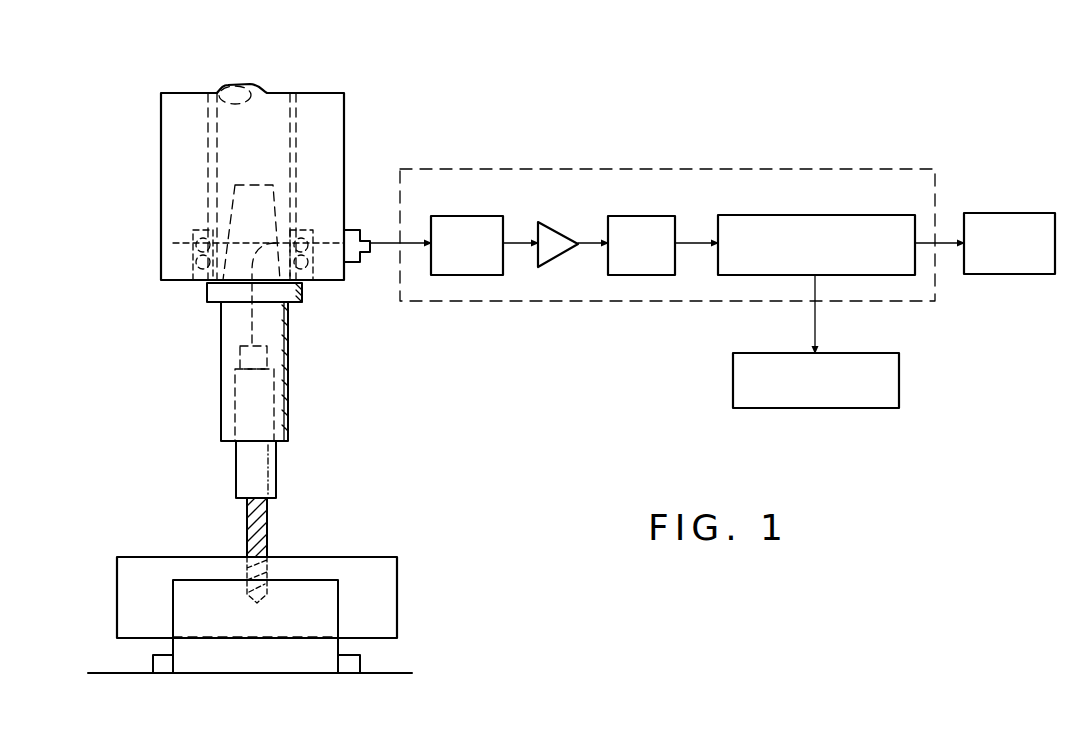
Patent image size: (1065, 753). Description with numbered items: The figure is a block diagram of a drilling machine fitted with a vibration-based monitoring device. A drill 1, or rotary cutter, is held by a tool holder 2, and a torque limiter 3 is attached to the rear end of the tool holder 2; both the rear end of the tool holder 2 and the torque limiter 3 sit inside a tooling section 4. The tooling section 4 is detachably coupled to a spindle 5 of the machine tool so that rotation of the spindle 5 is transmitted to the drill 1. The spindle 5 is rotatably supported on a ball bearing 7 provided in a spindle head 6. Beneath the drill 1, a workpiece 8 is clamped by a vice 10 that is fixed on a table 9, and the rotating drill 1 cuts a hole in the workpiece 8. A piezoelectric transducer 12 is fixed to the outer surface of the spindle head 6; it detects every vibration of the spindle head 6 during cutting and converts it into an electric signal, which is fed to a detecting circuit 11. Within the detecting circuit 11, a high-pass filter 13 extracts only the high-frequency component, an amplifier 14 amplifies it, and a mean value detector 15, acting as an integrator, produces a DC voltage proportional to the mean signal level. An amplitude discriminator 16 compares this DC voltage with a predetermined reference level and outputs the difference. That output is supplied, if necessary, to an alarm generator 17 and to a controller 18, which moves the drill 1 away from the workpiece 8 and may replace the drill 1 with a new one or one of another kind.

The drill 1 is at (269, 521).
The tool holder 2 is at (276, 469).
The torque limiter 3 is at (271, 361).
The tooling section 4 is at (221, 332).
The spindle 5 is at (208, 140).
The spindle head 6 is at (172, 177).
The ball bearing 7 is at (193, 246).
The workpiece 8 is at (148, 557).
The table 9 is at (105, 682).
The vice 10 is at (190, 582).
The detecting circuit 11 is at (761, 168).
The piezoelectric transducer 12 is at (355, 229).
The high-pass filter 13 is at (467, 216).
The amplifier 14 is at (554, 222).
The mean value detector 15 is at (645, 215).
The amplitude discriminator 16 is at (855, 216).
The alarm generator 17 is at (1007, 215).
The controller 18 is at (899, 382).